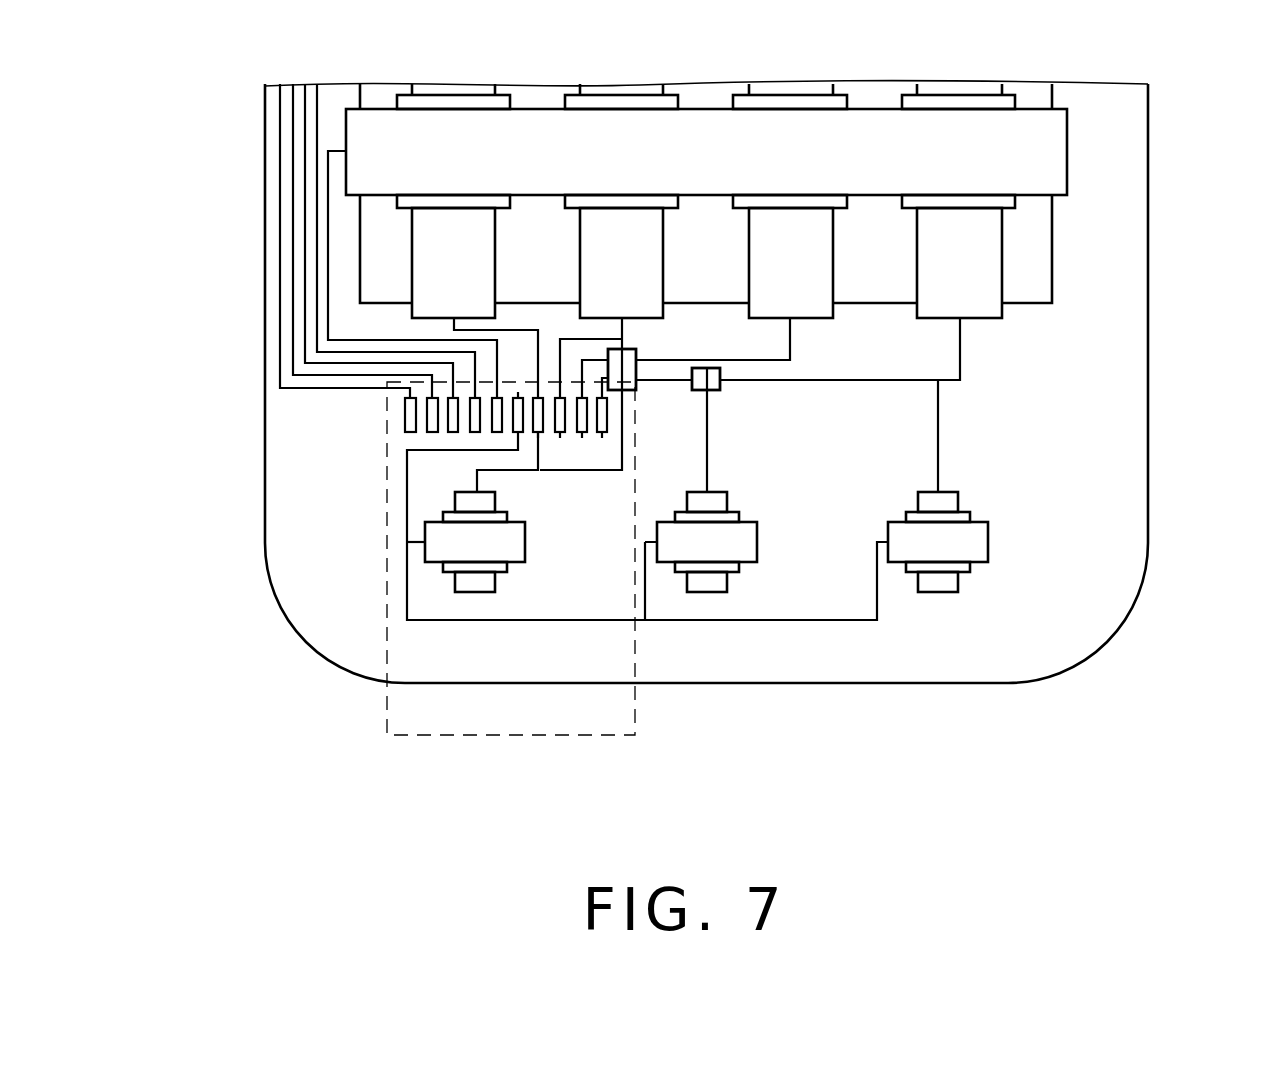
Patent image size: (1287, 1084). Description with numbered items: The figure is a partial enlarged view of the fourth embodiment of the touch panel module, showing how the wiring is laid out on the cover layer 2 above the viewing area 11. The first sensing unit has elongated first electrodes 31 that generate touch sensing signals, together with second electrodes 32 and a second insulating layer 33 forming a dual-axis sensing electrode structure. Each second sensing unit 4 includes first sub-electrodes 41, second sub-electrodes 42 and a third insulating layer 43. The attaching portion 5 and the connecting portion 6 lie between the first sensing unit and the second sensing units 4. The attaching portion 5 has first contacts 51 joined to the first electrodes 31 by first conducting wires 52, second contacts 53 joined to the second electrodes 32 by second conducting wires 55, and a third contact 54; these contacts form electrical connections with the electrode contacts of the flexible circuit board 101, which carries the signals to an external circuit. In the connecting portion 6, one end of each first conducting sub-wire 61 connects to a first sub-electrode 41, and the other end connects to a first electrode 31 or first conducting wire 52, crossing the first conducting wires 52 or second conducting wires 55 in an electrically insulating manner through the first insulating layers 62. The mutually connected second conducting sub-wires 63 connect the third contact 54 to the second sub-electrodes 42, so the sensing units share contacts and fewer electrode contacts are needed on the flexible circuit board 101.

The cover layer 2 is at (1113, 365).
The second sensing unit 4 is at (763, 633).
The attaching portion 5 is at (322, 463).
The connecting portion 6 is at (815, 786).
The viewing area 11 is at (382, 253).
The first electrode 31 is at (982, 272).
The second electrode 32 is at (1037, 153).
The second insulating layer 33 is at (997, 202).
The first sub-electrode 41 is at (930, 617).
The second sub-electrode 42 is at (975, 542).
The third insulating layer 43 is at (965, 567).
The first contact 51 is at (539, 435).
The first conducting wire 52 is at (575, 338).
The second contact 53 is at (437, 414).
The third contact 54 is at (517, 396).
The second conducting wire 55 is at (266, 220).
The first conducting sub-wire 61 is at (541, 434).
The first insulating layer 62 is at (624, 392).
The second conducting sub-wire 63 is at (519, 434).
The flexible circuit board 101 is at (417, 710).